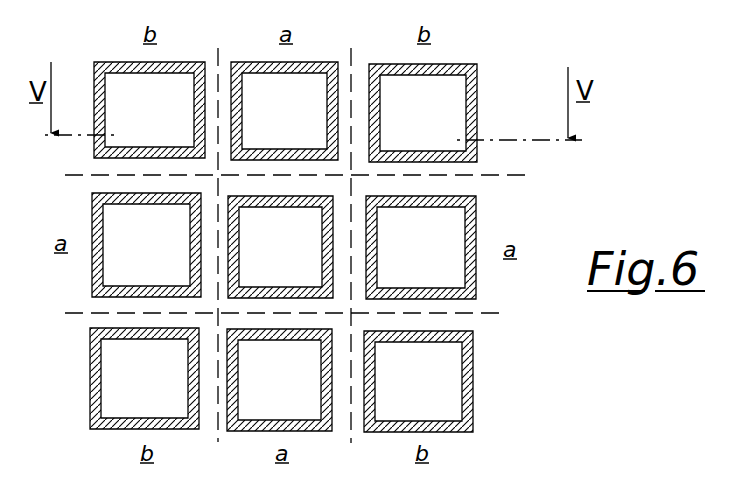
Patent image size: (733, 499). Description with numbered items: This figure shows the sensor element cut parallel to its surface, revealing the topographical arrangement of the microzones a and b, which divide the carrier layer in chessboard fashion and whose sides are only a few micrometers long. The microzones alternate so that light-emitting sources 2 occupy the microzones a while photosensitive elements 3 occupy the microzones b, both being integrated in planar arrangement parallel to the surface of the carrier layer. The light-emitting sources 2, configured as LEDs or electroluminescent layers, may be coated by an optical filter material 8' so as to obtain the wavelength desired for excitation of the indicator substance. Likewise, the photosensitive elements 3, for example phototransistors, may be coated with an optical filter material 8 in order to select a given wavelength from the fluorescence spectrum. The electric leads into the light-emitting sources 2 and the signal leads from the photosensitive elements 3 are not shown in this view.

The light-emitting sources 2 is at (429, 260).
The photosensitive elements 3 is at (427, 394).
The optical filter material 8 is at (456, 248).
The optical filter material 8' is at (473, 242).